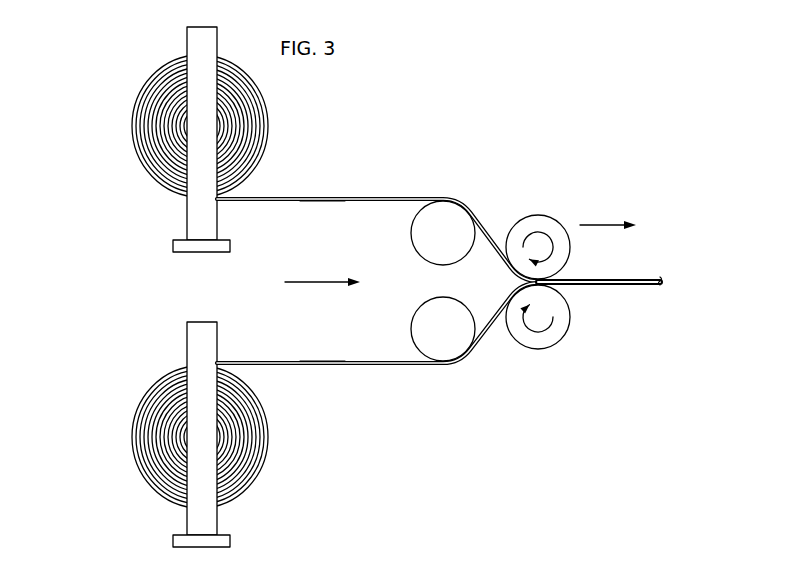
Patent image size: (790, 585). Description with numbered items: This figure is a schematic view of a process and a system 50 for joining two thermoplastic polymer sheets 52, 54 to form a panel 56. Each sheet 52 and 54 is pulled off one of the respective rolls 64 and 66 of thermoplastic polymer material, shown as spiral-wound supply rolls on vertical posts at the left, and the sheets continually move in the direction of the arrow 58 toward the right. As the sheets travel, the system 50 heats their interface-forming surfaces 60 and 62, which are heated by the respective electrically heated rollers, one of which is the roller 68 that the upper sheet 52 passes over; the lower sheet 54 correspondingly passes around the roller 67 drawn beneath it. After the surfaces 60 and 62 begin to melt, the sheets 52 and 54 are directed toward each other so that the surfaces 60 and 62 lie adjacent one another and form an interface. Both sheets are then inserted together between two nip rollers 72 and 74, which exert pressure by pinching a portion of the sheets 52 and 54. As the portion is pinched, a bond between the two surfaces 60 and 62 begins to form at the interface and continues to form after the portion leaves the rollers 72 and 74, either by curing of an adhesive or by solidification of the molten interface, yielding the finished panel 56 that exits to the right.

The system 50 is at (455, 103).
The thermoplastic polymer sheet 52 is at (340, 198).
The thermoplastic polymer sheet 54 is at (340, 366).
The panel 56 is at (625, 280).
The arrow 58 is at (312, 282).
The interface-forming surface 60 is at (322, 203).
The interface-forming surface 62 is at (313, 361).
The roll 64 is at (117, 72).
The roll 66 is at (129, 370).
The lower guide roller 67 is at (447, 343).
The electrically heated roller 68 is at (447, 217).
The nip roller 72 is at (552, 213).
The nip roller 74 is at (549, 347).